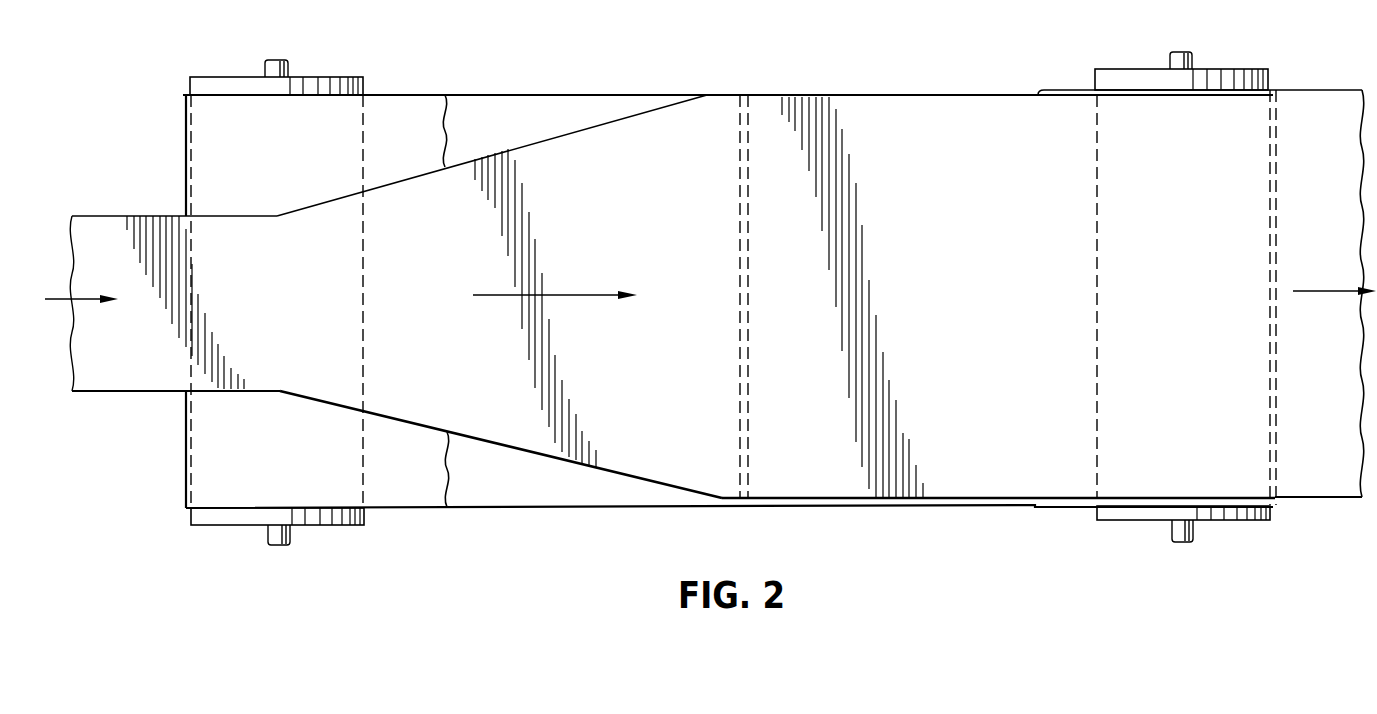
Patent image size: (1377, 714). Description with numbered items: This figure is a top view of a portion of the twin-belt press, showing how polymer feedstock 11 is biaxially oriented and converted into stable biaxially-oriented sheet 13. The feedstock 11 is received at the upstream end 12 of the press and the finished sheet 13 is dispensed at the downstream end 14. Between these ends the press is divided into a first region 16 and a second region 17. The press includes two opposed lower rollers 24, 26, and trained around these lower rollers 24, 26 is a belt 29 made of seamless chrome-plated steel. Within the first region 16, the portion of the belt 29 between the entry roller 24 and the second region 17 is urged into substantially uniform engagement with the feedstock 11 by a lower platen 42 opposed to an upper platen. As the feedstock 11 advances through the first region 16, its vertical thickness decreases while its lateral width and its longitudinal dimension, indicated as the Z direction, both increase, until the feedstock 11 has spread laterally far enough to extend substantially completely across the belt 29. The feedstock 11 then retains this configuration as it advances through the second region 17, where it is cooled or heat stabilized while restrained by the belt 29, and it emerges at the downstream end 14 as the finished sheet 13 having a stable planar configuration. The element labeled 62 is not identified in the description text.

The polymer feedstock 11 is at (240, 308).
The upstream end 12 is at (155, 425).
The biaxially-oriented sheet 13 is at (1328, 250).
The downstream end 14 is at (1328, 528).
The first region 16 is at (553, 160).
The second region 17 is at (940, 128).
The lower roller 24 is at (347, 76).
The lower roller 26 is at (1117, 73).
The belt 29 is at (423, 102).
The lower platen 42 is at (602, 98).
The bolt 62 is at (289, 70).